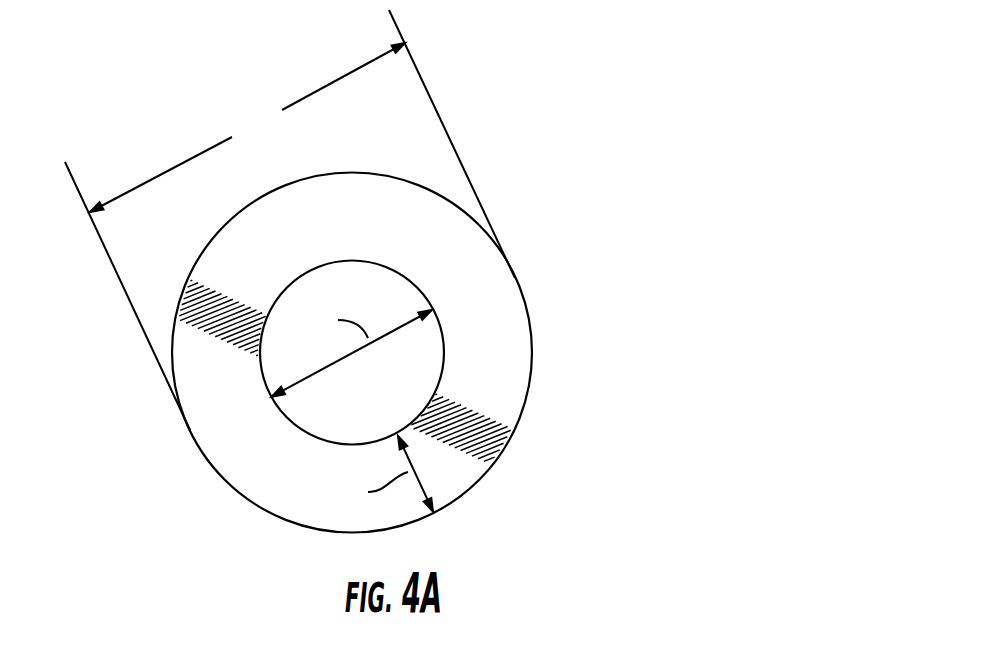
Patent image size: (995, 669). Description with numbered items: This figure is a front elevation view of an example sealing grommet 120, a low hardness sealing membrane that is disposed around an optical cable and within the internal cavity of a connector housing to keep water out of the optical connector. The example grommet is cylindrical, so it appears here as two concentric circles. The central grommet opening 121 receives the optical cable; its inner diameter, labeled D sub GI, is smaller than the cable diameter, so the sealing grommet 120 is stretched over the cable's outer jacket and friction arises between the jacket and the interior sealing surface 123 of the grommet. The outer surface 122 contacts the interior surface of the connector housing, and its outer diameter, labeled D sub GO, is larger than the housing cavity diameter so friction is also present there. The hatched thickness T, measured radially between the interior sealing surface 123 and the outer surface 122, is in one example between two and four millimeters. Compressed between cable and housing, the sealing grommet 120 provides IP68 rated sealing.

The sealing grommet 120 is at (608, 137).
The grommet opening 121 is at (335, 403).
The outer surface 122 is at (529, 325).
The interior sealing surface 123 is at (441, 381).